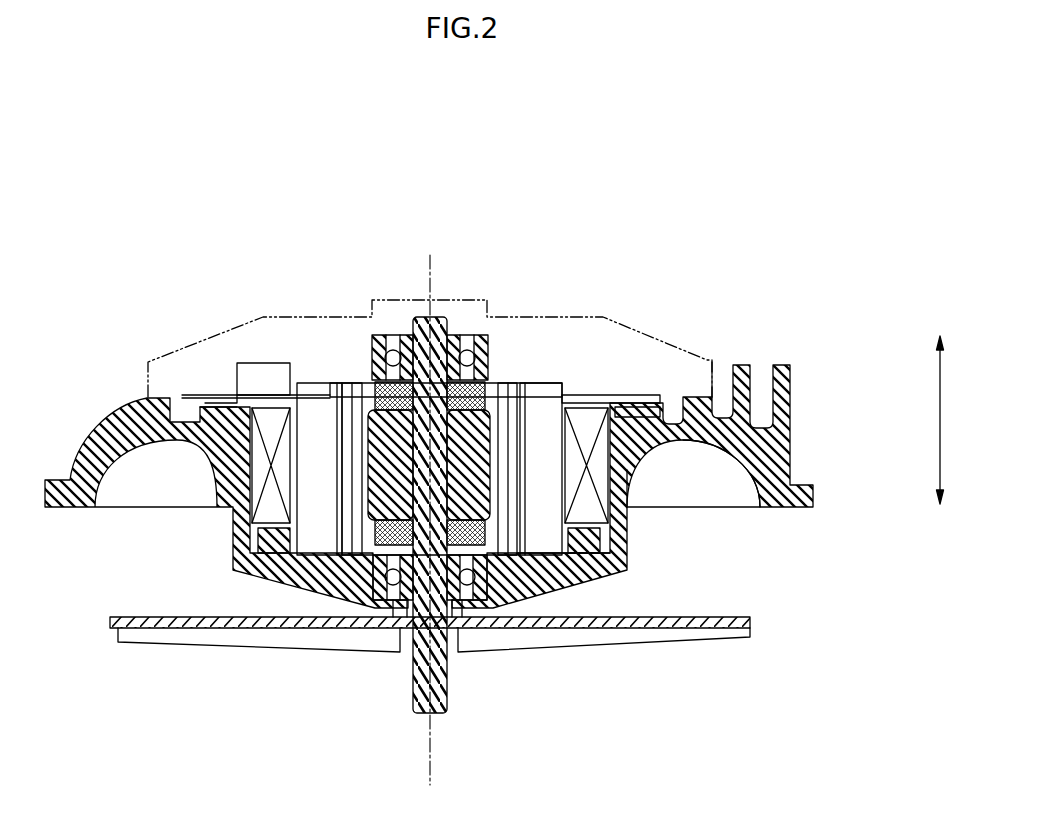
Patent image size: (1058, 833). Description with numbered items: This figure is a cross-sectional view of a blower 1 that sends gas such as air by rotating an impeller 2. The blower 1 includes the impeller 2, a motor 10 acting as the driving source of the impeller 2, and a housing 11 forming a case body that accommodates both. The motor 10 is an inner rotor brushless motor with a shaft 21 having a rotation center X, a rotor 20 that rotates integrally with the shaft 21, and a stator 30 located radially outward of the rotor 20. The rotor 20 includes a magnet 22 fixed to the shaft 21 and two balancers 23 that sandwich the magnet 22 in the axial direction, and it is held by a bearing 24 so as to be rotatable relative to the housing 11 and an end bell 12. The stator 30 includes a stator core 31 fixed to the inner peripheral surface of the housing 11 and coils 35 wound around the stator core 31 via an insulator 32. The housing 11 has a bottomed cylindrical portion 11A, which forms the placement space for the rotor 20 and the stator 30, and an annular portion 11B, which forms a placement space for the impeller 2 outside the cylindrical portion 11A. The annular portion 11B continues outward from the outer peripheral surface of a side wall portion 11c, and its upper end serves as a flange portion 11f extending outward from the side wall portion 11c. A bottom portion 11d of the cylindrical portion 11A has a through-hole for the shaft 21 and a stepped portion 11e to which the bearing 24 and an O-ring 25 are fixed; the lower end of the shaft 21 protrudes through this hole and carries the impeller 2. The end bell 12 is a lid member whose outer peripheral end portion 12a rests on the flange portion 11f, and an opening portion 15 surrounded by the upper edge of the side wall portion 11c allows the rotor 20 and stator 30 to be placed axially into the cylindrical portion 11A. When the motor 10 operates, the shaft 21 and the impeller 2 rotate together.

The blower 1 is at (858, 703).
The impeller 2 is at (750, 624).
The motor 10 is at (497, 270).
The blower housing 11 is at (224, 596).
The bottomed cylindrical portion 11A is at (228, 541).
The annular portion 11B is at (800, 457).
The side wall portion 11c is at (628, 497).
The bottom portion 11d is at (527, 607).
The stepped portion 11e is at (373, 628).
The flange portion 11f is at (700, 442).
The end bell 12 is at (225, 330).
The outer peripheral end portion 12a is at (706, 360).
The opening portion 15 is at (240, 390).
The rotor 20 is at (362, 410).
The shaft 21 is at (442, 713).
The magnet 22 is at (495, 388).
The balancers 23 is at (456, 385).
The bearing 24 is at (380, 335).
The O-ring 25 is at (357, 583).
The stator 30 is at (288, 575).
The stator core 31 is at (572, 555).
The insulator 32 is at (578, 578).
The coils 35 is at (320, 417).